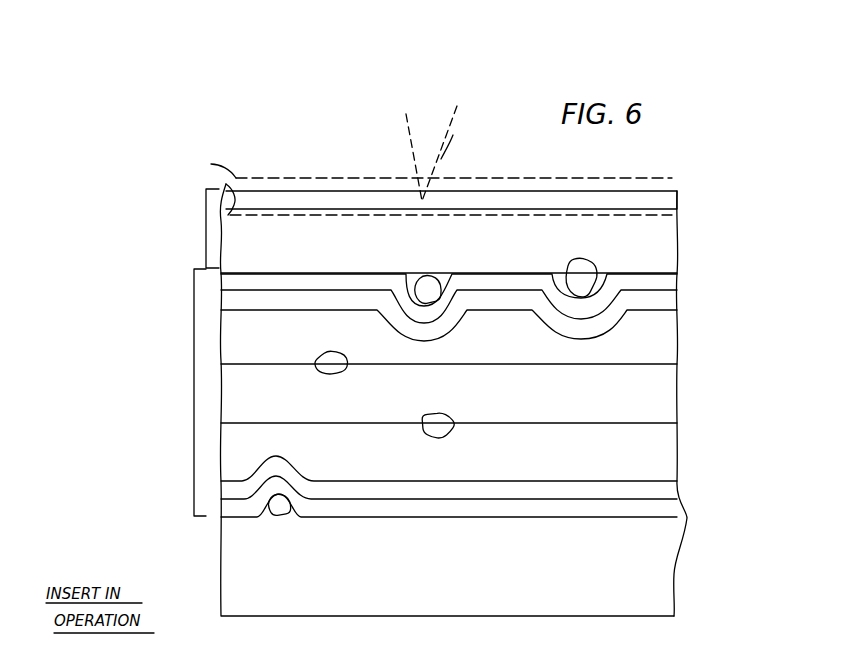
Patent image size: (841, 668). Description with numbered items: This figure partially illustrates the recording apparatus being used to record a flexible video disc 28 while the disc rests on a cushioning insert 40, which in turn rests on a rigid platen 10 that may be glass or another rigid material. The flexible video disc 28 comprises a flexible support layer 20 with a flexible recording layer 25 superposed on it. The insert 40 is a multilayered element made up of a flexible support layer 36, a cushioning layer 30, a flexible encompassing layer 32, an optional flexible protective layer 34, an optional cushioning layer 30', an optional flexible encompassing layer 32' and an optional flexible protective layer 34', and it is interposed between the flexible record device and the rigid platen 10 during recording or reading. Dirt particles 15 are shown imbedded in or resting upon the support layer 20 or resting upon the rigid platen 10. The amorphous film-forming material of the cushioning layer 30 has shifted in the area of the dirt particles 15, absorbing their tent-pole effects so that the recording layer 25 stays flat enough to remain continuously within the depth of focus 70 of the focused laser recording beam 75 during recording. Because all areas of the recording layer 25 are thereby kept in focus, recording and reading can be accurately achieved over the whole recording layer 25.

The rigid platen 10 is at (665, 560).
The dirt particles 15 is at (573, 282).
The flexible support layer 20 is at (660, 240).
The flexible recording layer 25 is at (668, 203).
The flexible video disc 28 is at (202, 223).
The cushioning layer 30 is at (471, 333).
The optional cushioning layer 30' is at (470, 441).
The flexible encompassing layer 32 is at (471, 306).
The optional flexible encompassing layer 32' is at (470, 475).
The optional flexible protective layer 34 is at (471, 290).
The optional flexible protective layer 34' is at (478, 501).
The flexible support layer 36 is at (655, 393).
The insert 40 is at (190, 384).
The depth of focus 70 is at (207, 163).
The focused laser recording beam 75 is at (407, 134).